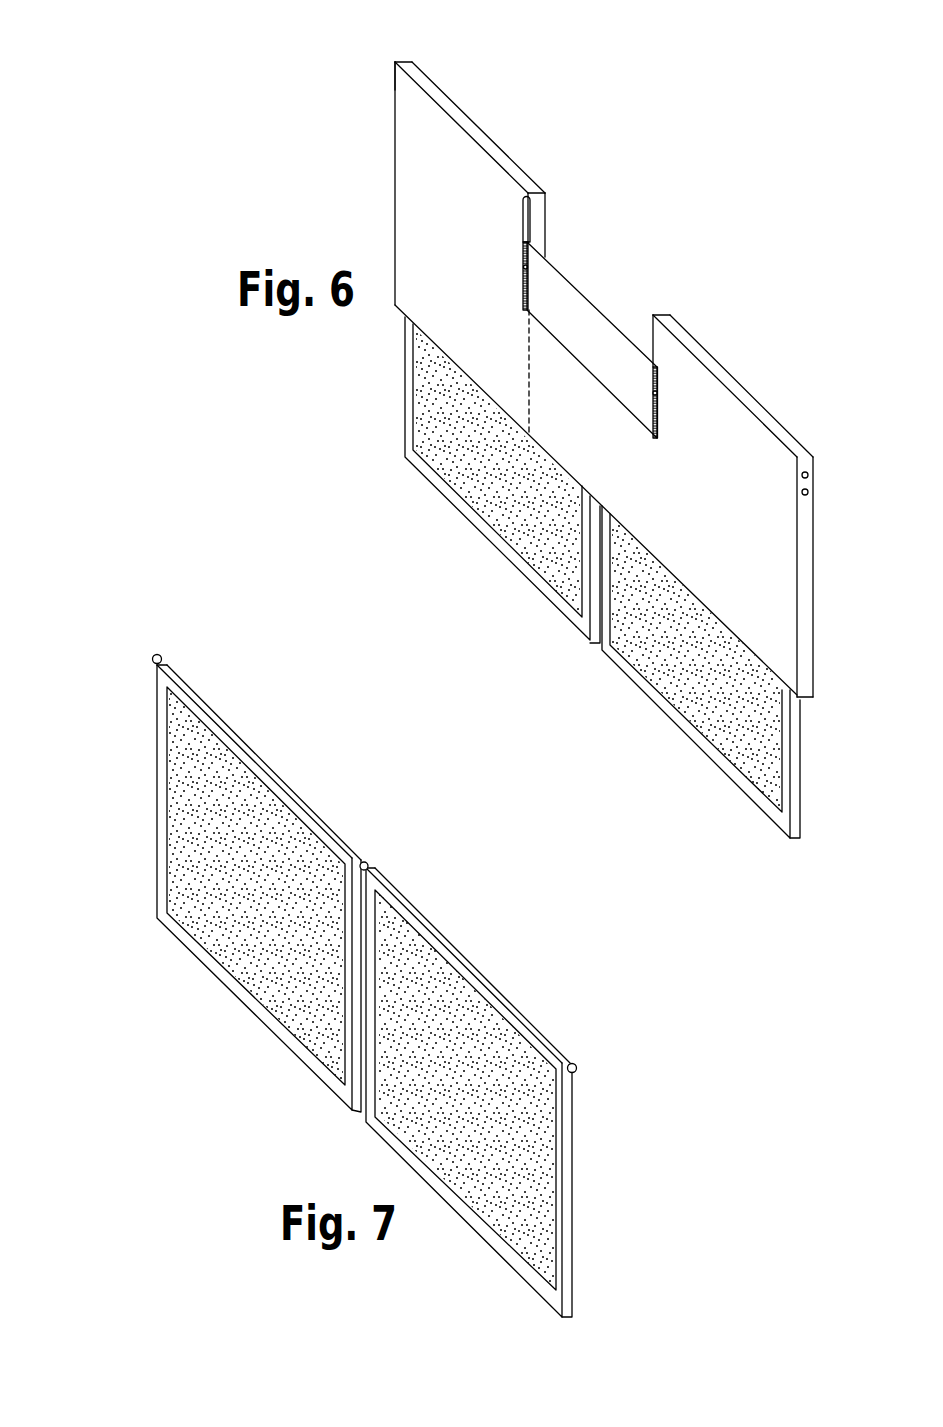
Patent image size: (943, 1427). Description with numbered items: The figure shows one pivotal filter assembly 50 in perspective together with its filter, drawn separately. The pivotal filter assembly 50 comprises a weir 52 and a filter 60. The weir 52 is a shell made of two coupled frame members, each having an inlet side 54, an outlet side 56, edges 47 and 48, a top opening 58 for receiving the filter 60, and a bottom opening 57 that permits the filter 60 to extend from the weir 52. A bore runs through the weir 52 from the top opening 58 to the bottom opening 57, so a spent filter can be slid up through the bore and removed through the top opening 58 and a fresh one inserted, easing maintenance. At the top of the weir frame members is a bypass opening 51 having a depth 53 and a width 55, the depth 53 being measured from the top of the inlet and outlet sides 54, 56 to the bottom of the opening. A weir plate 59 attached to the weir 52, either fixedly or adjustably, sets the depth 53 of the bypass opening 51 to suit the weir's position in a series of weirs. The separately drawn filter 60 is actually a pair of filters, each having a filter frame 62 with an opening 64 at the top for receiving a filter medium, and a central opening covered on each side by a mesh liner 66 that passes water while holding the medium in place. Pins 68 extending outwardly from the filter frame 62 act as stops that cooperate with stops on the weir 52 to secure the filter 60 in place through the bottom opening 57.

In FIG. 6, the edge 47 is at (398, 60).
In FIG. 6, the edge 48 is at (810, 493).
In FIG. 6, the pivotal filter assembly 50 is at (708, 214).
In FIG. 6, the bypass opening 51 is at (585, 266).
In FIG. 6, the weir 52 is at (818, 580).
In FIG. 6, the depth 53 is at (524, 216).
In FIG. 6, the inlet side 54 is at (412, 170).
In FIG. 6, the width 55 is at (547, 194).
In FIG. 6, the outlet side 56 is at (466, 110).
In FIG. 6, the bottom opening 57 is at (398, 312).
In FIG. 6, the top opening 58 is at (755, 395).
In FIG. 6, the weir plate 59 is at (640, 400).
In FIG. 6, the filter 60 is at (796, 761).
In FIG. 7, the filter 60 is at (560, 920).
In FIG. 7, the filter frame 62 is at (575, 1145).
In FIG. 7, the opening 64 is at (400, 895).
In FIG. 7, the mesh liner 66 is at (273, 987).
In FIG. 7, the pin 68 is at (154, 655).